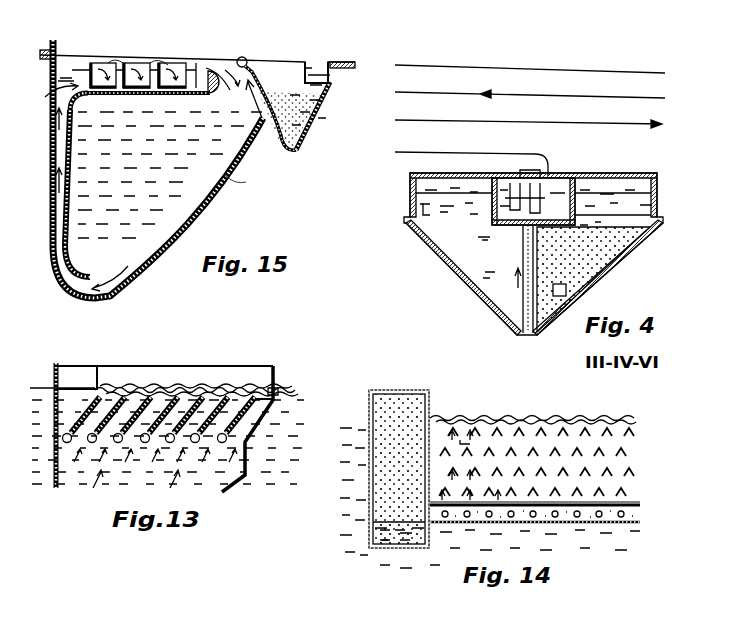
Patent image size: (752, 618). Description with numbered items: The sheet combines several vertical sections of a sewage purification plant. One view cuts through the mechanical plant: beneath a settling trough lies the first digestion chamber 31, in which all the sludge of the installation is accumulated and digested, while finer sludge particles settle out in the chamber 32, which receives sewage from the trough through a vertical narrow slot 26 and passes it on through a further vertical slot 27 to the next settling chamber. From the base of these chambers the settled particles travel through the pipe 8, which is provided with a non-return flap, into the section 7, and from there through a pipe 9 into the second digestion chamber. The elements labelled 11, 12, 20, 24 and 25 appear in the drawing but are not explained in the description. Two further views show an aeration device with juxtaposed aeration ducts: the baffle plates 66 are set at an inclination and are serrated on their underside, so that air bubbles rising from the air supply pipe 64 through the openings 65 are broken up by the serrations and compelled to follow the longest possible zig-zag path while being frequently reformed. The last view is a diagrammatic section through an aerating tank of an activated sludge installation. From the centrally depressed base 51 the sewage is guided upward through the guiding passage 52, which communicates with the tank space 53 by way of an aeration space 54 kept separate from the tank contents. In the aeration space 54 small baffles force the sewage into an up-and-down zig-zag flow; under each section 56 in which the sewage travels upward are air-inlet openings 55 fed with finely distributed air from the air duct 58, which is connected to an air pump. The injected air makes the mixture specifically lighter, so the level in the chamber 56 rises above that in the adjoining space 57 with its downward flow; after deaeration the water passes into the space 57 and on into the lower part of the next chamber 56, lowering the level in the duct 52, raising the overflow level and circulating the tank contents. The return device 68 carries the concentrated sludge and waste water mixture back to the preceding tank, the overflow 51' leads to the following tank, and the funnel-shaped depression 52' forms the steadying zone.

In FIG. 4, the section 7 is at (613, 216).
In FIG. 4, the pipe 8 is at (522, 254).
In FIG. 4, the pipe 9 is at (548, 186).
In FIG. 4, the feed line 11 is at (420, 152).
In FIG. 4, the flow line 12 is at (530, 123).
In FIG. 4, the flow line 20 is at (581, 69).
In FIG. 13, the sprinkler nozzles 24 is at (118, 445).
In FIG. 4, the supply pipe 25 is at (504, 94).
In FIG. 13, the supply pipe 25 is at (248, 450).
In FIG. 13, the vertical narrow slot 26 is at (274, 425).
In FIG. 4, the vertical slot 27 is at (533, 254).
In FIG. 14, the vertical slot 27 is at (376, 415).
In FIG. 4, the digestion chamber 31 is at (601, 292).
In FIG. 4, the chamber 32 is at (486, 257).
In FIG. 15, the centrally depressed base 51 is at (158, 169).
In FIG. 15, the overflow 51' is at (324, 60).
In FIG. 15, the guiding passage 52 is at (92, 199).
In FIG. 15, the funnel-shaped depression 52' is at (309, 127).
In FIG. 15, the tank space 53 is at (220, 190).
In FIG. 15, the aeration space 54 is at (126, 63).
In FIG. 15, the air-inlet openings 55 is at (168, 94).
In FIG. 15, the section 56 is at (102, 63).
In FIG. 15, the space 57 is at (108, 96).
In FIG. 15, the air duct 58 is at (78, 104).
In FIG. 14, the air supply pipe 64 is at (620, 524).
In FIG. 14, the openings 65 is at (562, 521).
In FIG. 14, the baffle plates 66 is at (628, 476).
In FIG. 15, the return device 68 is at (264, 102).